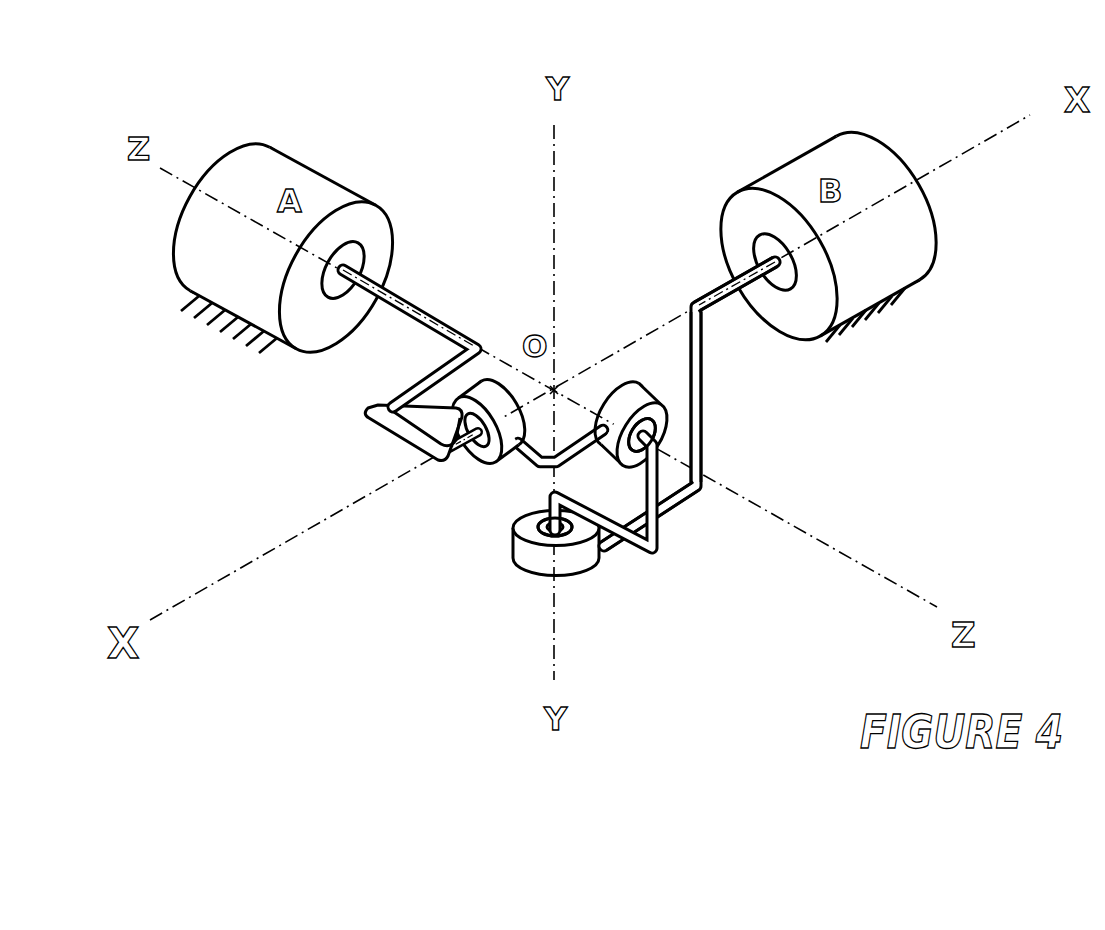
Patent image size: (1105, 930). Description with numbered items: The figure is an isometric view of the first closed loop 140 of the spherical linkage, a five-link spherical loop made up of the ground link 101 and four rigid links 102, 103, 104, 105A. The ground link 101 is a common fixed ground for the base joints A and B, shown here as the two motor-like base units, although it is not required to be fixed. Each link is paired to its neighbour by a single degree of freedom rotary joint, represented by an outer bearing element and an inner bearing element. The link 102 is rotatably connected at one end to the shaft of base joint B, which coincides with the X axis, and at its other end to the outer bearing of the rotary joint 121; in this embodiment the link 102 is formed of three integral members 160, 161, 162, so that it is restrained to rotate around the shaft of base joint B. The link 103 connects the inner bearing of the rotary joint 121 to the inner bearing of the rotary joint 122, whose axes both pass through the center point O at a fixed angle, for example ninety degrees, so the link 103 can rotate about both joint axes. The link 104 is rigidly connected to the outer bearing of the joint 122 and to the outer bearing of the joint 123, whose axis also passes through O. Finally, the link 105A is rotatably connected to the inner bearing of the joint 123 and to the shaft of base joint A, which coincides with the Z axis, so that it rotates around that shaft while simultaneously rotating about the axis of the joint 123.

The first closed loop 140 is at (432, 160).
The ground link 101 is at (554, 328).
The link 105A is at (443, 321).
The rotary joint 123 is at (380, 404).
The rotary joint 122 is at (617, 401).
The link 104 is at (527, 468).
The rotary joint 121 is at (528, 566).
The link 103 is at (649, 553).
The link 102 is at (698, 348).
The integral member 160 is at (728, 302).
The integral member 161 is at (703, 430).
The integral member 162 is at (673, 503).